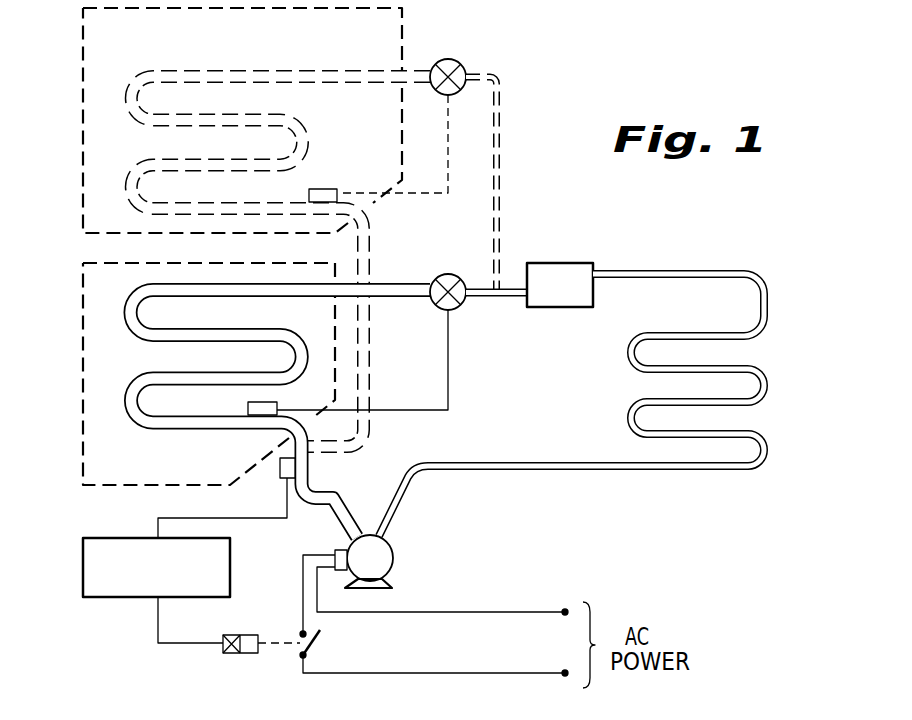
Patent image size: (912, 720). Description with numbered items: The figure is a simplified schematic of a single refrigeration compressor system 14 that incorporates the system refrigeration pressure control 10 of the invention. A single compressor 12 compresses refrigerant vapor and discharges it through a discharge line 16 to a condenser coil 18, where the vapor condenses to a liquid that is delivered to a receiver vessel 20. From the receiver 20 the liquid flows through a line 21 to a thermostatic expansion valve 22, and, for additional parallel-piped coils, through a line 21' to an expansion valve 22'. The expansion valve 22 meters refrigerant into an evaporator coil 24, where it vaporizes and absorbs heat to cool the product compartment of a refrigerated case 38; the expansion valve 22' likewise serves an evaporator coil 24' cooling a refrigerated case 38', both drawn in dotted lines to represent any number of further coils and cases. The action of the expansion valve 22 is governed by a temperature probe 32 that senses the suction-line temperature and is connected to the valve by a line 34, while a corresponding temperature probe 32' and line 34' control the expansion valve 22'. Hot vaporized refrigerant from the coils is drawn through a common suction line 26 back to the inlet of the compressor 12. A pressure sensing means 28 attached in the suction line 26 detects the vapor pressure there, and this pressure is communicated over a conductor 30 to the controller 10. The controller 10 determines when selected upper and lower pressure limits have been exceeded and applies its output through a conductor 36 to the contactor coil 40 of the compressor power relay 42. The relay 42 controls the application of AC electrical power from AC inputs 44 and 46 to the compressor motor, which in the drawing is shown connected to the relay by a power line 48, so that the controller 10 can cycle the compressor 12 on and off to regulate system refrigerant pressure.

The system refrigeration pressure control 10 is at (83, 567).
The compressor 12 is at (395, 563).
The single refrigeration compressor system 14 is at (512, 278).
The discharge line 16 is at (499, 472).
The condenser coil 18 is at (771, 390).
The receiver vessel 20 is at (573, 304).
The line 21 is at (519, 339).
The line 21' is at (511, 183).
The expansion valve 22 is at (448, 292).
The expansion valve 22' is at (466, 57).
The evaporator coil 24 is at (264, 405).
The evaporator coil 24' is at (280, 237).
The suction line 26 is at (309, 473).
The pressure sensing means 28 is at (278, 481).
The conductor 30 is at (158, 518).
The temperature probe 32 is at (286, 398).
The temperature probe 32' is at (338, 177).
The line 34 is at (383, 360).
The line 34' is at (411, 144).
The conductor 36 is at (153, 618).
The refrigerated case 38 is at (181, 386).
The refrigerated case 38' is at (215, 120).
The contactor coil 40 is at (253, 656).
The compressor power relay 42 is at (313, 660).
The AC input 44 is at (497, 612).
The AC input 46 is at (523, 678).
The compressor power line 48 is at (303, 555).